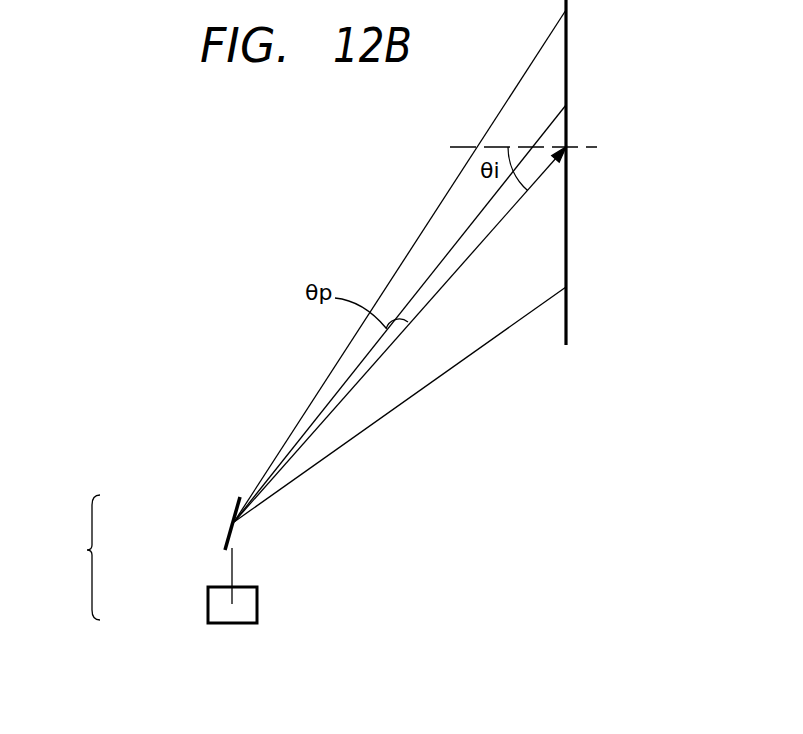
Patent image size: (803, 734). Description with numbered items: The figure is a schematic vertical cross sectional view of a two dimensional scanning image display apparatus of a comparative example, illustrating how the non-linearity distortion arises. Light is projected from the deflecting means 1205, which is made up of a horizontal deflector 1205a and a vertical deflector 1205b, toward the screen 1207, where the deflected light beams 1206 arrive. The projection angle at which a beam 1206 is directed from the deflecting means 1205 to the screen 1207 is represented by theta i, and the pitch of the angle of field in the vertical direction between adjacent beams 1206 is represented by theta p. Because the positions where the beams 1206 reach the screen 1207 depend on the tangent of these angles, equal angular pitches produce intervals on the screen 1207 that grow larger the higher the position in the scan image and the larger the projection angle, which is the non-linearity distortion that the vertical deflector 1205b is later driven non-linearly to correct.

The deflecting means 1205 is at (144, 559).
The horizontal deflector 1205a is at (208, 602).
The vertical deflector 1205b is at (233, 522).
The light beam 1206 is at (437, 295).
The screen 1207 is at (566, 212).